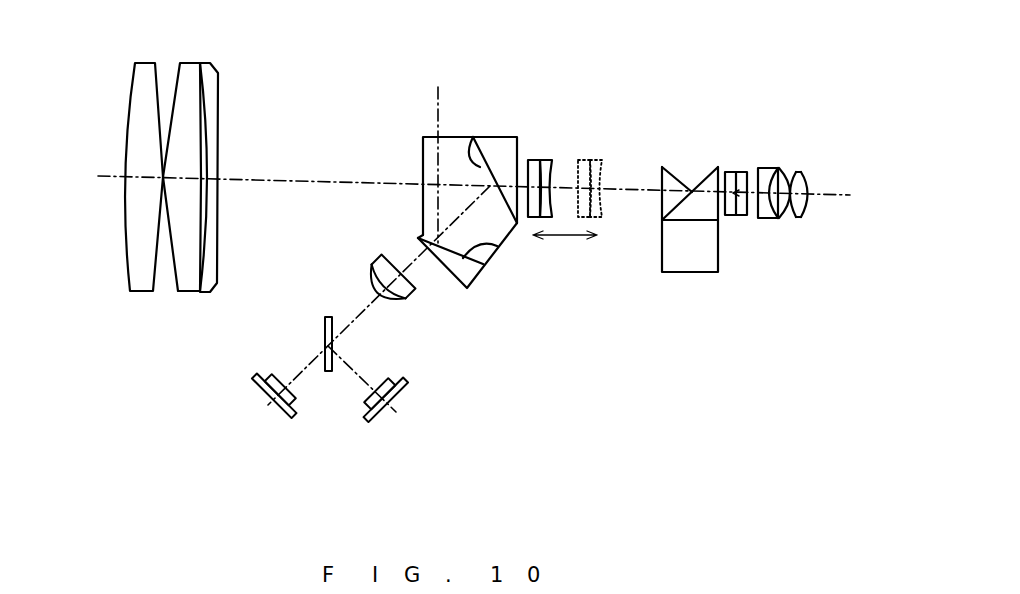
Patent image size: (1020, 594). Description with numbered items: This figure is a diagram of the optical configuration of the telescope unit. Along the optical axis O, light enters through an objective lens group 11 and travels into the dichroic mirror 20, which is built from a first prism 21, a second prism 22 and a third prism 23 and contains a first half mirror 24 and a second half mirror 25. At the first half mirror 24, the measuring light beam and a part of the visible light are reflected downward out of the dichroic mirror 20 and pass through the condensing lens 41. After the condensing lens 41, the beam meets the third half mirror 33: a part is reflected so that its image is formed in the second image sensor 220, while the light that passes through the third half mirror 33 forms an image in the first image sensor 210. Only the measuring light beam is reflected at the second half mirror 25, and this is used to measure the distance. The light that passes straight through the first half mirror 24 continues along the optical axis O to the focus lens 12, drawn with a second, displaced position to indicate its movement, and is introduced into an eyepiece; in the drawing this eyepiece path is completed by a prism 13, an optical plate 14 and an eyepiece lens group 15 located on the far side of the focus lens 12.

The optical axis O is at (280, 180).
The objective lens group 11 is at (226, 303).
The focus lens 12 is at (543, 159).
The prism 13 is at (669, 171).
The optical plate 14 is at (736, 216).
The eyepiece lens group 15 is at (812, 162).
The dichroic mirror 20 is at (416, 137).
The first prism 21 is at (423, 163).
The second prism 22 is at (504, 138).
The third prism 23 is at (482, 273).
The first half mirror 24 is at (473, 139).
The second half mirror 25 is at (497, 246).
The third half mirror 33 is at (329, 317).
The condensing lens 41 is at (403, 296).
The first image sensor 210 is at (281, 404).
The second image sensor 220 is at (380, 410).